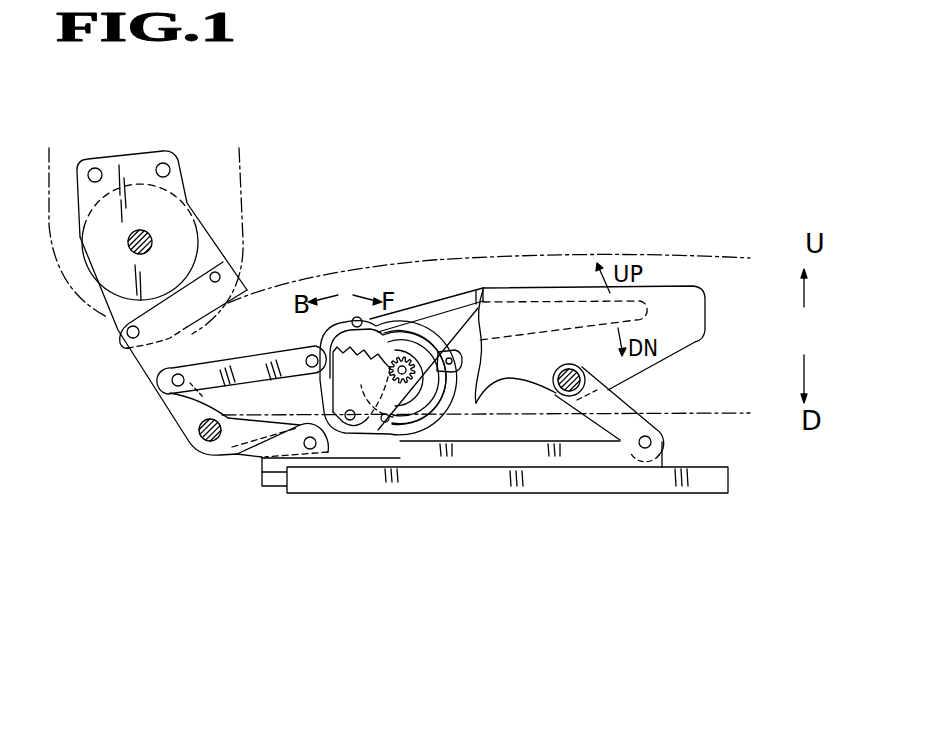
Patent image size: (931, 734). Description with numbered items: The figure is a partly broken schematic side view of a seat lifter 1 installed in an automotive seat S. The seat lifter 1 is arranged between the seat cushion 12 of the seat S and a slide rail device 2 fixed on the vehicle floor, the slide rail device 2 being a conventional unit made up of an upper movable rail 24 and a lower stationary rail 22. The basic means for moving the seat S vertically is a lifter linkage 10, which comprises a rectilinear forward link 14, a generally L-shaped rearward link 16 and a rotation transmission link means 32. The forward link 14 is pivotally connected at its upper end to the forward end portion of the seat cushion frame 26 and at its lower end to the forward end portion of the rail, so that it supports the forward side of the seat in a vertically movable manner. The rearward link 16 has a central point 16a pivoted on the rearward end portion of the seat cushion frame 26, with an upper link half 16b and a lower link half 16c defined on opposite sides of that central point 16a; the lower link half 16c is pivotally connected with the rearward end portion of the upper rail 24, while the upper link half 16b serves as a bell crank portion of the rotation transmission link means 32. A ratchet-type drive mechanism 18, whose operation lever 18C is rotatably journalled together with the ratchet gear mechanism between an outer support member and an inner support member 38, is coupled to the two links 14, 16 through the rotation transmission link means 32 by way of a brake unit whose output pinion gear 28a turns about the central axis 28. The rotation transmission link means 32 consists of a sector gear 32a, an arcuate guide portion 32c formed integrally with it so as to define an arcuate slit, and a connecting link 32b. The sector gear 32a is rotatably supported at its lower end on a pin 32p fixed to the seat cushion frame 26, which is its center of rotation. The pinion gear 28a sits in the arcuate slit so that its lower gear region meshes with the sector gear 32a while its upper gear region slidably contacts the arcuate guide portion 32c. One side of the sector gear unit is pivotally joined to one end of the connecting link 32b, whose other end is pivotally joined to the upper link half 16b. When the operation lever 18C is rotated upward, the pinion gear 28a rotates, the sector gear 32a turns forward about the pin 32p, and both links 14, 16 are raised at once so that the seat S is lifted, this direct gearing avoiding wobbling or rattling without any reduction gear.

The seat lifter 1 is at (481, 520).
The slide rail device 2 is at (653, 559).
The lifter linkage 10 is at (150, 423).
The seat cushion 12 is at (295, 244).
The forward link 14 is at (617, 403).
The rearward link 16 is at (173, 423).
The central point 16a is at (185, 417).
The upper link half 16b is at (163, 407).
The lower link half 16c is at (233, 457).
The ratchet-type drive mechanism 18 is at (423, 300).
The operation lever 18C is at (462, 297).
The lower stationary rail 22 is at (557, 490).
The upper movable rail 24 is at (608, 458).
The seat cushion frame 26 is at (704, 333).
The central axis 28 is at (472, 403).
The output pinion gear 28a is at (500, 352).
The rotation transmission link means 32 is at (455, 589).
The sector gear 32a is at (333, 357).
The connecting link 32b is at (248, 380).
The arcuate guide portion 32c is at (359, 328).
The pin 32p is at (349, 415).
The inner support member 38 is at (445, 303).
The automotive seat S is at (492, 157).